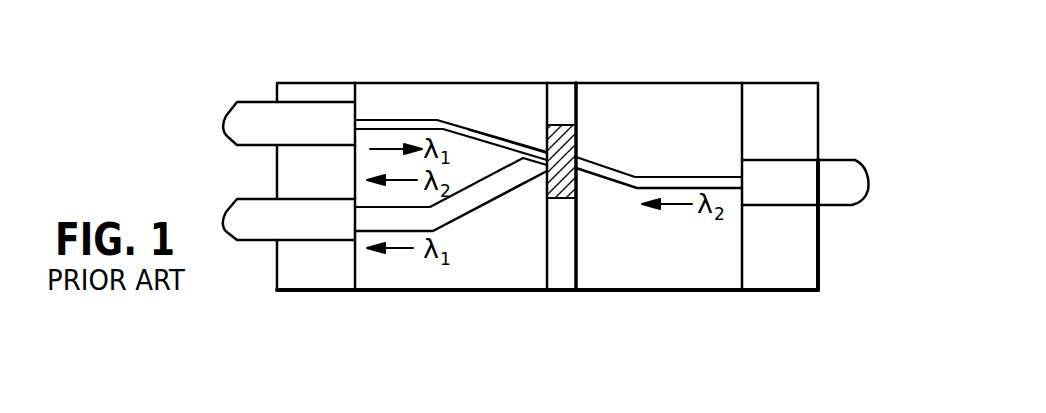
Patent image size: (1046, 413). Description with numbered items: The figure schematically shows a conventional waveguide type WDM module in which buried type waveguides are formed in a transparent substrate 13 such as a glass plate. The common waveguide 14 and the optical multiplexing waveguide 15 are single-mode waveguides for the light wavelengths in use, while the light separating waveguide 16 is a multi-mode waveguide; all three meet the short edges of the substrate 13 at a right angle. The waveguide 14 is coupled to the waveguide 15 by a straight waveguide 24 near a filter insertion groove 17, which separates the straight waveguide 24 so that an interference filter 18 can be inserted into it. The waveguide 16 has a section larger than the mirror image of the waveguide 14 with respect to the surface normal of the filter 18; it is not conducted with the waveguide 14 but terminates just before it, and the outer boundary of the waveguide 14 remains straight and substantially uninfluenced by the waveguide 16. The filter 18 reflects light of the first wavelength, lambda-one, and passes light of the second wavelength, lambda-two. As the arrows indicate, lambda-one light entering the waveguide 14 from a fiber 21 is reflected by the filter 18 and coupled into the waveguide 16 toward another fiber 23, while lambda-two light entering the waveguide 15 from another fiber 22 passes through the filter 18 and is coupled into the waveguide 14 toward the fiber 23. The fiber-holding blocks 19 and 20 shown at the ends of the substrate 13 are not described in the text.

The transparent substrate 13 is at (675, 97).
The common waveguide 14 is at (392, 117).
The optical multiplexing waveguide 15 is at (710, 178).
The light separating waveguide 16 is at (468, 205).
The filter insertion groove 17 is at (558, 272).
The interference filter 18 is at (562, 142).
The left optical fiber block 19 is at (322, 277).
The right optical fiber block 20 is at (762, 280).
The fiber 21 is at (312, 117).
The fiber 22 is at (783, 192).
The fiber 23 is at (307, 227).
The straight waveguide 24 is at (483, 128).